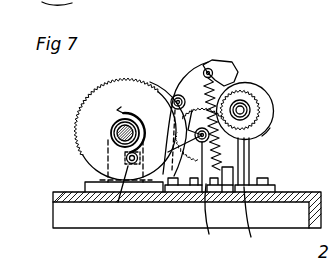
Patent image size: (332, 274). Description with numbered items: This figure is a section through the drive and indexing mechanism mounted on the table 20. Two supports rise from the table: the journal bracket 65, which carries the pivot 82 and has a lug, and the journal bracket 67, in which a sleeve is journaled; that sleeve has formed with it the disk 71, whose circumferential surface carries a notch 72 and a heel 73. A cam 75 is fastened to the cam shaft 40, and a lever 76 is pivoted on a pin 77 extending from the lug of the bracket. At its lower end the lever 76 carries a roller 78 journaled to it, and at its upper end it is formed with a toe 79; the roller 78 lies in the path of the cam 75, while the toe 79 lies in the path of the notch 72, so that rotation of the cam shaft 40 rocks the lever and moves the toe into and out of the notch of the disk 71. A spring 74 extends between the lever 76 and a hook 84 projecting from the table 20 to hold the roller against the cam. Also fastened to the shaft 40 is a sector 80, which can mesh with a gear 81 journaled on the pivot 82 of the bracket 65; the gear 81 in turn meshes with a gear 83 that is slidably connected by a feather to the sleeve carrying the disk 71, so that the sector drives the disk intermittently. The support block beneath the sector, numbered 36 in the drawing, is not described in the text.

The table 20 is at (54, 209).
The support block 36 is at (86, 185).
The cam shaft 40 is at (116, 134).
The journal bracket 65 is at (181, 192).
The journal bracket 67 is at (253, 160).
The disk 71 is at (288, 153).
The notch 72 is at (210, 70).
The heel 73 is at (232, 76).
The spring 74 is at (205, 199).
The cam 75 is at (122, 108).
The lever 76 is at (195, 92).
The pin 77 is at (172, 96).
The roller 78 is at (129, 187).
The toe 79 is at (238, 88).
The sector 80 is at (78, 118).
The gear 81 is at (268, 130).
The pivot 82 is at (190, 153).
The gear 83 is at (252, 111).
The hook 84 is at (246, 211).